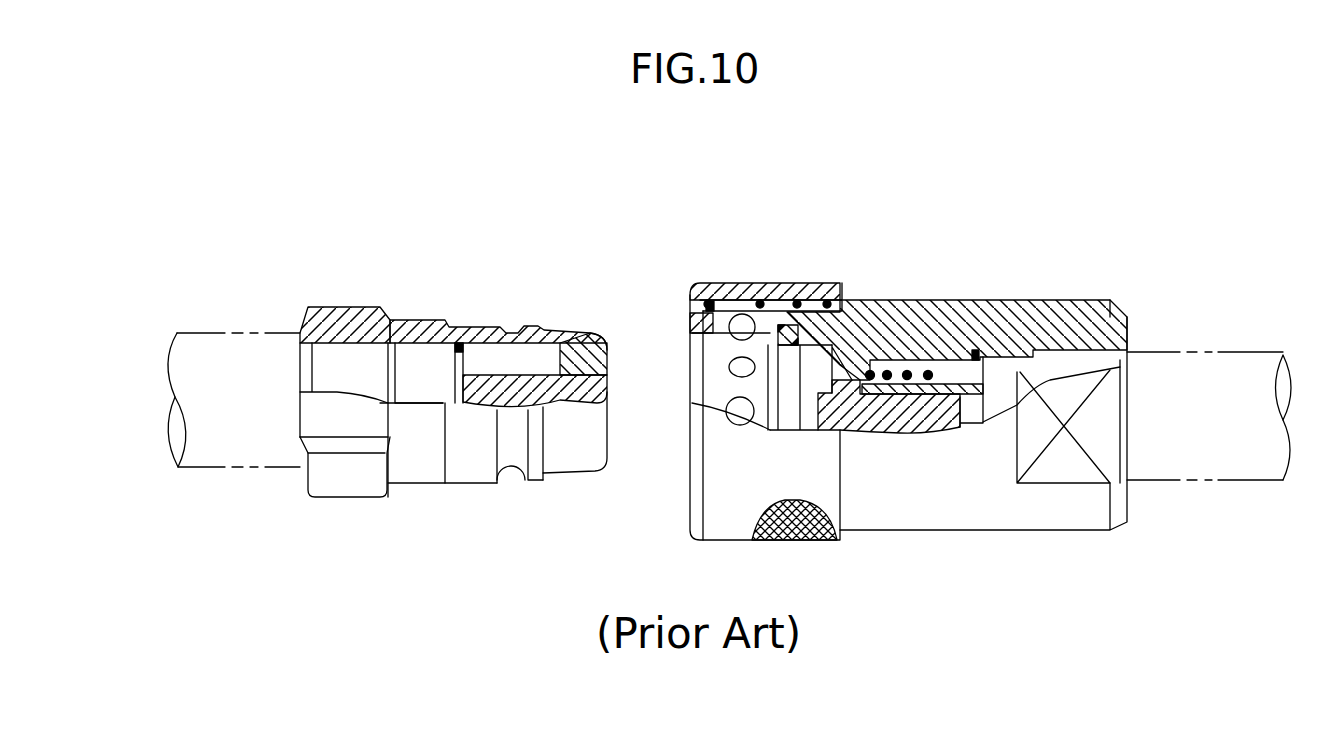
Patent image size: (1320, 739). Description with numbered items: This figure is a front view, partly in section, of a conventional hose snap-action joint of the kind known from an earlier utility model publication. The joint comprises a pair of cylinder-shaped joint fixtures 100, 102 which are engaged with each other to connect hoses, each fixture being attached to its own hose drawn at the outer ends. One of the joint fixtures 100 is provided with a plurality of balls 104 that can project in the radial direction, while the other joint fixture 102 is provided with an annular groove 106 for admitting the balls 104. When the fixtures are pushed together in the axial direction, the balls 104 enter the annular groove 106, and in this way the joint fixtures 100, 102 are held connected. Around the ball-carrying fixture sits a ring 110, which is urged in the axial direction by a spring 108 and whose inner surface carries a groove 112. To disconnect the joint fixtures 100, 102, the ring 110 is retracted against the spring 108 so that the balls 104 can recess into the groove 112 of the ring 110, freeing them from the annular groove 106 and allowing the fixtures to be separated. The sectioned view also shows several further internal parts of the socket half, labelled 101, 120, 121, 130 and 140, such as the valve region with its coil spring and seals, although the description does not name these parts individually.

The joint fixture 100 is at (947, 300).
The valve seat 101 is at (843, 363).
The joint fixture 102 is at (352, 320).
The balls 104 is at (738, 414).
The annular groove 106 is at (517, 328).
The spring 108 is at (806, 300).
The ring 110 is at (745, 283).
The groove 112 is at (705, 306).
The valve piston 120 is at (900, 435).
The spring 121 is at (865, 376).
The seal ring 130 is at (973, 387).
The pipe fitting 140 is at (985, 386).